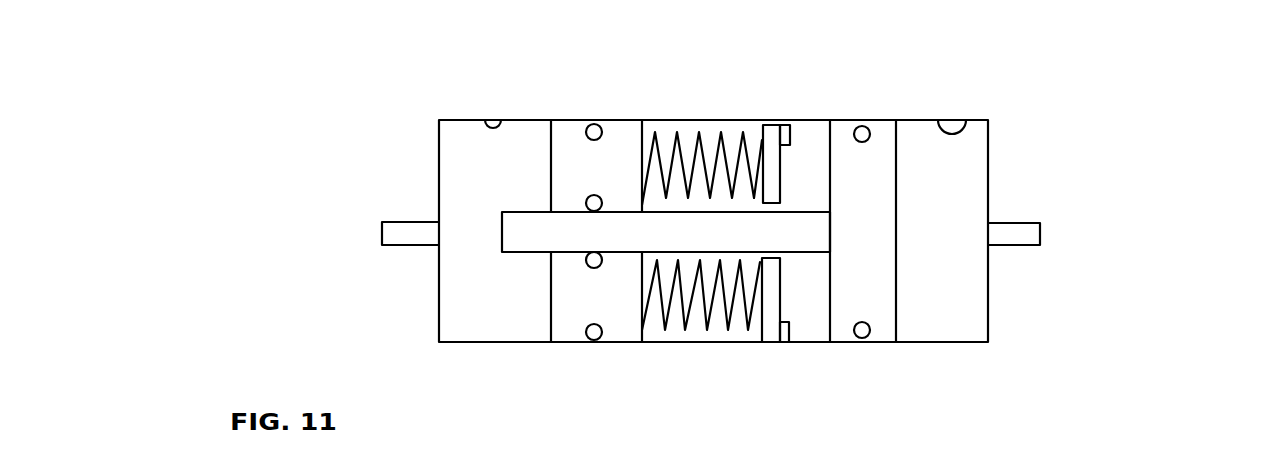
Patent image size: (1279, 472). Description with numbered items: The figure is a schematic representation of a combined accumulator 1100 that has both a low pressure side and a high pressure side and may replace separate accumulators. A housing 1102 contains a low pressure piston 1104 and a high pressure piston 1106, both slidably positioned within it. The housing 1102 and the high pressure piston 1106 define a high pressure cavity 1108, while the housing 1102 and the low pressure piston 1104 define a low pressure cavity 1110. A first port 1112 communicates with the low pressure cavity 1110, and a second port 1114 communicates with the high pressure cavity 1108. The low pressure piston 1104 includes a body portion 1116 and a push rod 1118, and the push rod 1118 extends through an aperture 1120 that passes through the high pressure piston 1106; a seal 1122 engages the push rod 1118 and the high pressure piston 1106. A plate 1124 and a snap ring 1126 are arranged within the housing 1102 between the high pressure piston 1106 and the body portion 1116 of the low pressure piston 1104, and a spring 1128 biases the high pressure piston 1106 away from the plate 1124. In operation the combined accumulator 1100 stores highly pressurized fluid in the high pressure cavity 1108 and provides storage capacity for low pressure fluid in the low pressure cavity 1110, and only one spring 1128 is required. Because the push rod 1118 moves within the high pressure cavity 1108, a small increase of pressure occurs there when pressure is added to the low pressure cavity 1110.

The combined accumulator 1100 is at (1135, 228).
The housing 1102 is at (968, 344).
The low pressure piston 1104 is at (885, 130).
The high pressure piston 1106 is at (567, 130).
The high pressure cavity 1108 is at (485, 120).
The low pressure cavity 1110 is at (957, 122).
The first port 1112 is at (1041, 232).
The second port 1114 is at (403, 219).
The body portion 1116 is at (883, 328).
The push rod 1118 is at (802, 233).
The aperture 1120 is at (572, 249).
The seal 1122 is at (595, 197).
The plate 1124 is at (771, 328).
The snap ring 1126 is at (785, 335).
The spring 1128 is at (672, 320).